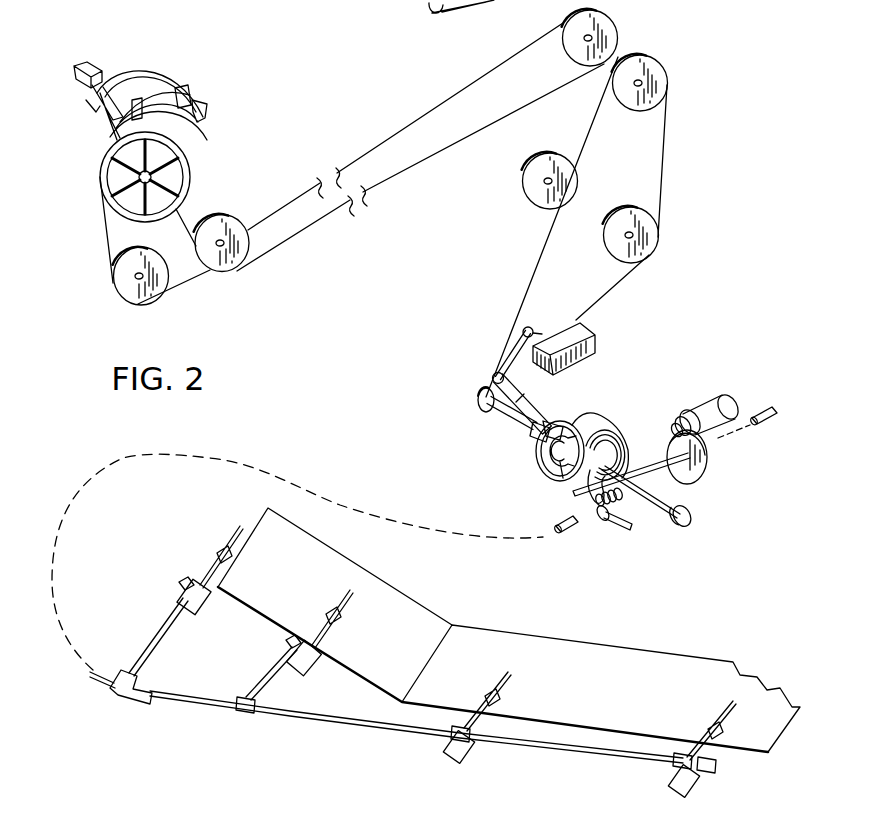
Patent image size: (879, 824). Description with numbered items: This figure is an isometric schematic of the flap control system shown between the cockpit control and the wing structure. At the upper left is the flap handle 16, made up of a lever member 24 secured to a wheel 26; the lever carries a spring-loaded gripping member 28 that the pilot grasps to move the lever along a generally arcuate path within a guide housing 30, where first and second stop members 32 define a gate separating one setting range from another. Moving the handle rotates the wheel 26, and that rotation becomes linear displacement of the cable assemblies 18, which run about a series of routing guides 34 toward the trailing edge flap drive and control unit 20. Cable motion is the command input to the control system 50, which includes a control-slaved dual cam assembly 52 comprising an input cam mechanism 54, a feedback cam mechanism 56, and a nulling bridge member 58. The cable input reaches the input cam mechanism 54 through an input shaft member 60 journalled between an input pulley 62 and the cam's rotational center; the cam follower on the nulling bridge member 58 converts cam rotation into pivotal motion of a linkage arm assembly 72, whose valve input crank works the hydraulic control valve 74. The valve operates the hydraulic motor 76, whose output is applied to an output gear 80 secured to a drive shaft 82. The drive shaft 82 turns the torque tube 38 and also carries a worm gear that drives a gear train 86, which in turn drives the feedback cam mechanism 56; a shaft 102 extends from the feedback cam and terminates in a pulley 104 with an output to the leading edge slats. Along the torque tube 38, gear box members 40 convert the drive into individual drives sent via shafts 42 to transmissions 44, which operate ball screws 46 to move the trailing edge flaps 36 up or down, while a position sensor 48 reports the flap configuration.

The flap handle 16 is at (223, 102).
The cable assemblies 18 is at (398, 135).
The trailing edge flap drive and control unit 20 is at (735, 452).
The lever member 24 is at (104, 128).
The wheel 26 is at (186, 164).
The gripping member 28 is at (95, 62).
The guide housing 30 is at (163, 80).
The stop members 32 is at (188, 125).
The routing guides 34 is at (213, 270).
The trailing edge flaps 36 is at (550, 632).
The torque tube 38 is at (768, 410).
The gear box members 40 is at (135, 704).
The shafts 42 is at (153, 645).
The transmissions 44 is at (205, 608).
The ball screws 46 is at (218, 553).
The position sensor 48 is at (716, 770).
The control system 50 is at (528, 476).
The dual cam assembly 52 is at (625, 456).
The input cam mechanism 54 is at (535, 462).
The feedback cam mechanism 56 is at (676, 420).
The nulling bridge member 58 is at (563, 478).
The input shaft member 60 is at (496, 410).
The input pulley 62 is at (477, 397).
The linkage arm assembly 72 is at (537, 399).
The hydraulic control valve 74 is at (596, 343).
The hydraulic motor 76 is at (726, 394).
The output gear 80 is at (708, 466).
The drive shaft 82 is at (685, 492).
The gear train 86 is at (606, 530).
The shaft 102 is at (660, 525).
The pulley 104 is at (692, 520).